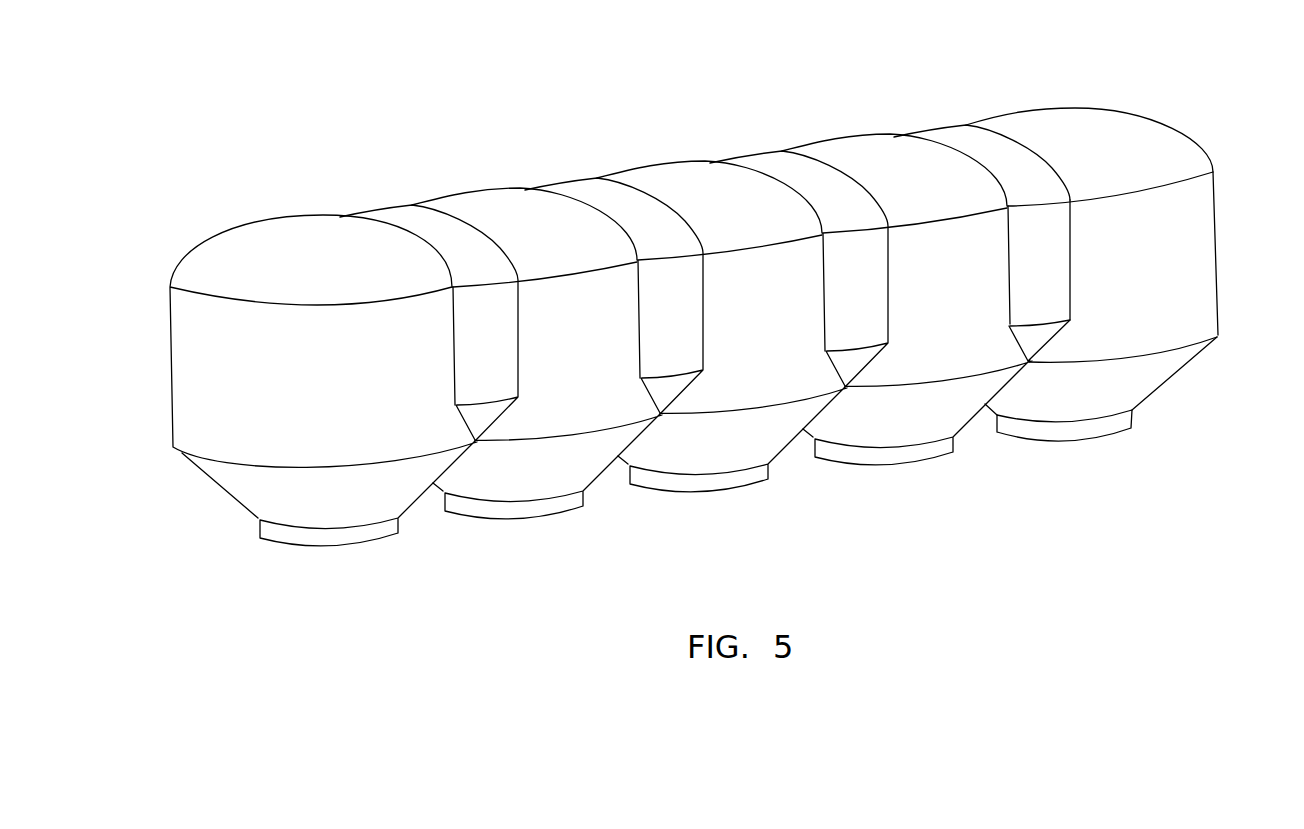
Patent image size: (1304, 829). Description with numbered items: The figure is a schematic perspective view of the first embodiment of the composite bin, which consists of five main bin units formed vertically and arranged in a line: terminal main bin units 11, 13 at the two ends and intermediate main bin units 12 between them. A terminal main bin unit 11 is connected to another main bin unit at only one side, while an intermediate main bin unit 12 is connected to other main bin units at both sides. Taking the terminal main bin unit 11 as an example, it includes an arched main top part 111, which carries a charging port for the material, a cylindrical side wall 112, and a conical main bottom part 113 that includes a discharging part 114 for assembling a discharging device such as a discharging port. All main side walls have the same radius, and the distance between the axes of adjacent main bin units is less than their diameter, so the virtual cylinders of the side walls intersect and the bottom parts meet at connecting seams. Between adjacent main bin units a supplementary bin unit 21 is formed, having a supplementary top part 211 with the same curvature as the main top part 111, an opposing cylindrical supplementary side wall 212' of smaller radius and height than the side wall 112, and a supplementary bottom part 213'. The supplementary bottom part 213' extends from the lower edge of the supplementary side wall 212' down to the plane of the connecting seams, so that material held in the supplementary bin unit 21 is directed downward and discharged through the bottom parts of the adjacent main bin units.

The terminal main bin unit 11 is at (1122, 254).
The intermediate main bin unit 12 is at (838, 135).
The terminal main bin unit 13 is at (222, 222).
The supplementary bin unit 21 is at (1021, 276).
The arched main top part 111 is at (1130, 130).
The cylindrical side wall 112 is at (1196, 264).
The conical main bottom part 113 is at (1148, 372).
The discharging part 114 is at (1075, 431).
The supplementary top part 211 is at (1030, 164).
The cylindrical supplementary side wall 212' is at (1079, 263).
The supplementary bottom part 213' is at (1047, 414).